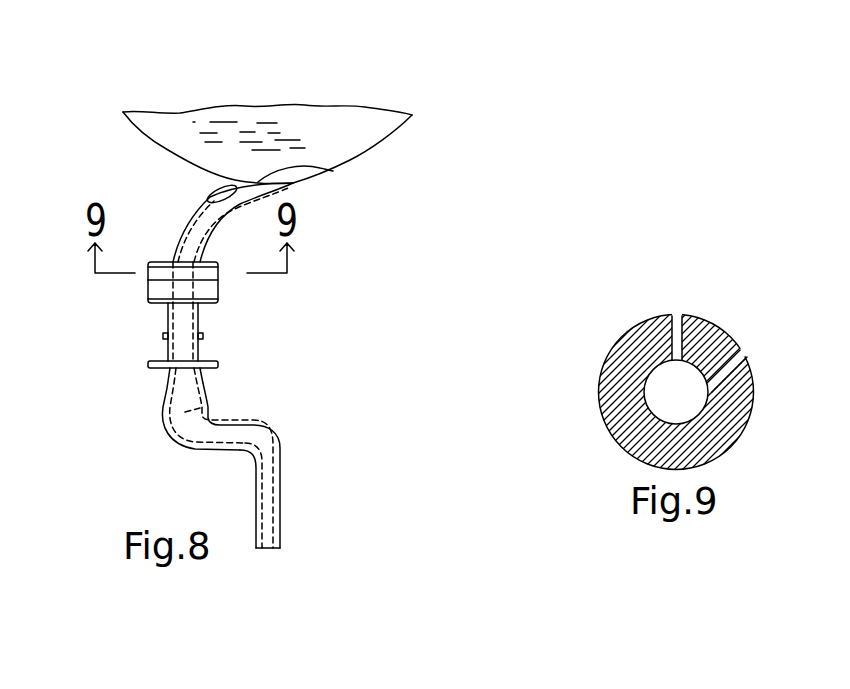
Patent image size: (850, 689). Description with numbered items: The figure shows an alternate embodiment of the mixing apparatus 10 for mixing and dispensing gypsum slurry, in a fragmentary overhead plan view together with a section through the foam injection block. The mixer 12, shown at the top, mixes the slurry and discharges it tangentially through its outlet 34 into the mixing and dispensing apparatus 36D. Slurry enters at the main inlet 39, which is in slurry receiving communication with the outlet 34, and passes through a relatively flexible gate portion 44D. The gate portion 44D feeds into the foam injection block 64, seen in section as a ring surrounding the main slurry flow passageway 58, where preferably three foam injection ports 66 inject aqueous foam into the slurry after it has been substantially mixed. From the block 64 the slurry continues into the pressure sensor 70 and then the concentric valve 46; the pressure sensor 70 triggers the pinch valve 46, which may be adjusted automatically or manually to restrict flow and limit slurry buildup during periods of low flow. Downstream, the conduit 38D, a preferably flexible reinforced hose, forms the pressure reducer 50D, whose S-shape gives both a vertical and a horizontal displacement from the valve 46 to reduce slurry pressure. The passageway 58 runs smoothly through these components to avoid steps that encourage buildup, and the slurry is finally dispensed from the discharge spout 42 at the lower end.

In FIG. 8, the mixing apparatus 10 is at (322, 82).
In FIG. 8, the mixer 12 is at (390, 142).
In FIG. 8, the outlet 34 is at (333, 171).
In FIG. 8, the main inlet 39 is at (207, 197).
In FIG. 8, the gate portion 44D is at (193, 230).
In FIG. 8, the pressure sensor 70 is at (212, 290).
In FIG. 8, the valve 46 is at (190, 343).
In FIG. 8, the mixing and dispensing apparatus 36D is at (133, 360).
In FIG. 8, the conduit 38D is at (162, 397).
In FIG. 8, the pressure reducer 50D is at (275, 441).
In FIG. 8, the main slurry flow passageway 58 is at (208, 402).
In FIG. 9, the main slurry flow passageway 58 is at (690, 408).
In FIG. 8, the discharge spout 42 is at (267, 550).
In FIG. 9, the foam injection block 64 is at (600, 400).
In FIG. 9, the foam injection ports 66 is at (674, 330).